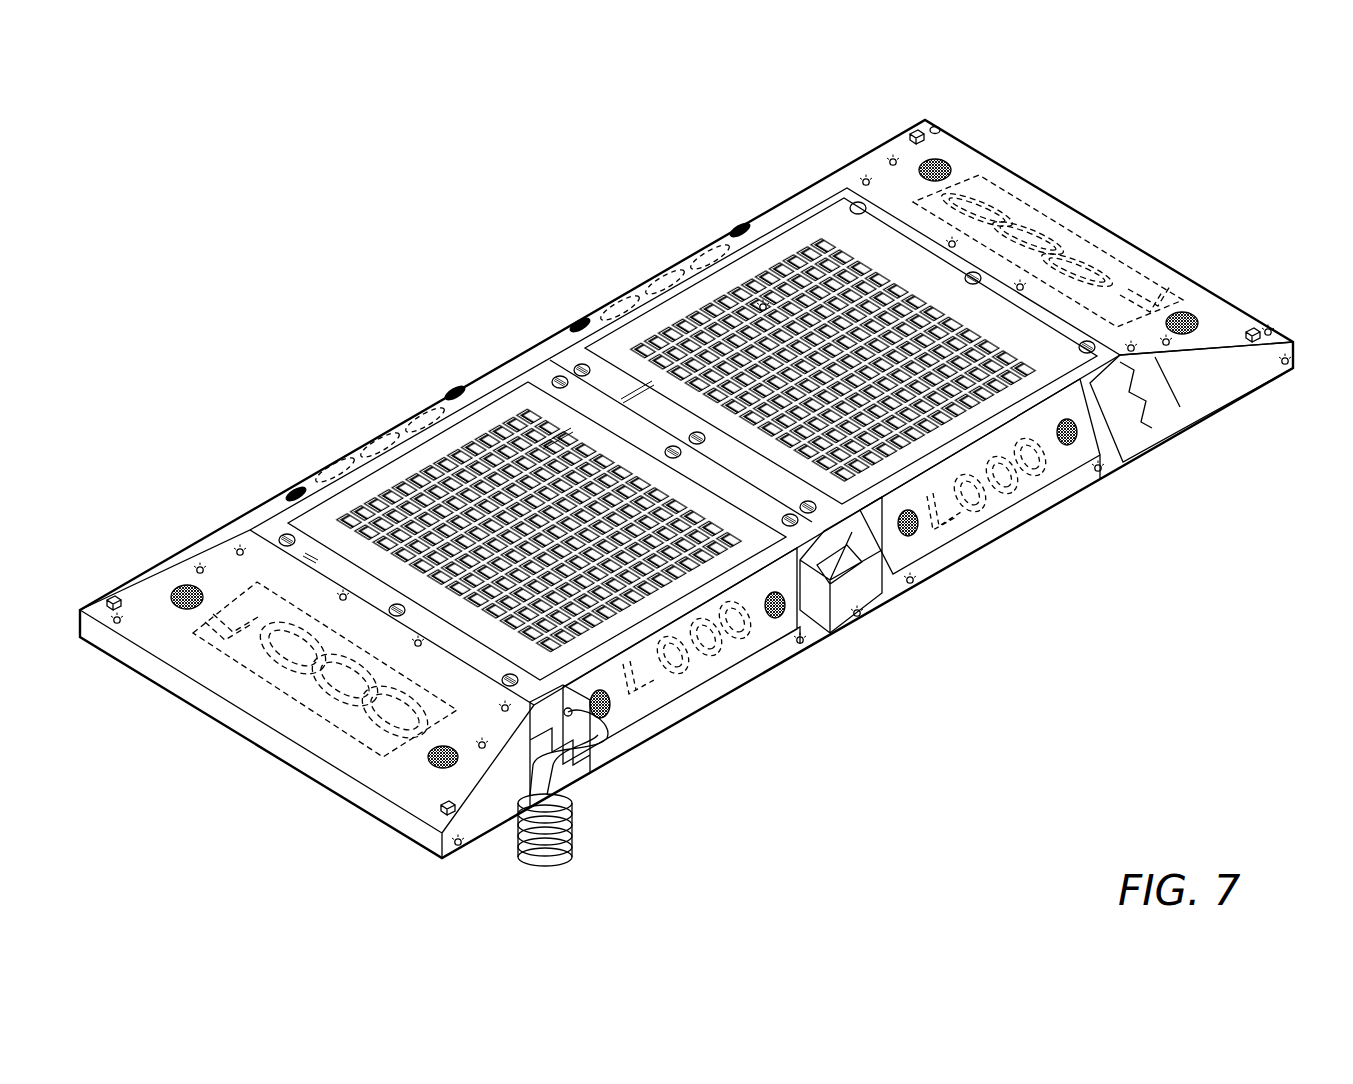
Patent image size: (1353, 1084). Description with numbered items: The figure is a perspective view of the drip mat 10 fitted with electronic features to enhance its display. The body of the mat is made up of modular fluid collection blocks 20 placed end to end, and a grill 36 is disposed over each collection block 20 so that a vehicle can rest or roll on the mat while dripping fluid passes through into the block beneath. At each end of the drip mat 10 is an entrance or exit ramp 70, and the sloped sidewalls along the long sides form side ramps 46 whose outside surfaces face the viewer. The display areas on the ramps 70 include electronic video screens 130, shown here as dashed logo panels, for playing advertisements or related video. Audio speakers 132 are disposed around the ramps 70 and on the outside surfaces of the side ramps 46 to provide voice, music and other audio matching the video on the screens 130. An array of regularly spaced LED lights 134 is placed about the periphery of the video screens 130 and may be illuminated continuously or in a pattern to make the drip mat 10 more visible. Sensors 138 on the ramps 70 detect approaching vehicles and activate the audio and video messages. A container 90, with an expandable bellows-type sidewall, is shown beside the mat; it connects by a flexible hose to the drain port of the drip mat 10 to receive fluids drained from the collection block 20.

The drip mat 10 is at (453, 133).
The modular fluid collection block 20 is at (706, 673).
The grill 36 is at (772, 243).
The side ramp 46 is at (738, 653).
The entrance and exit ramp 70 is at (180, 572).
The container 90 is at (572, 825).
The electronic video screen 130 is at (1045, 212).
The audio speaker 132 is at (940, 165).
The LED light 134 is at (866, 178).
The sensor 138 is at (925, 135).